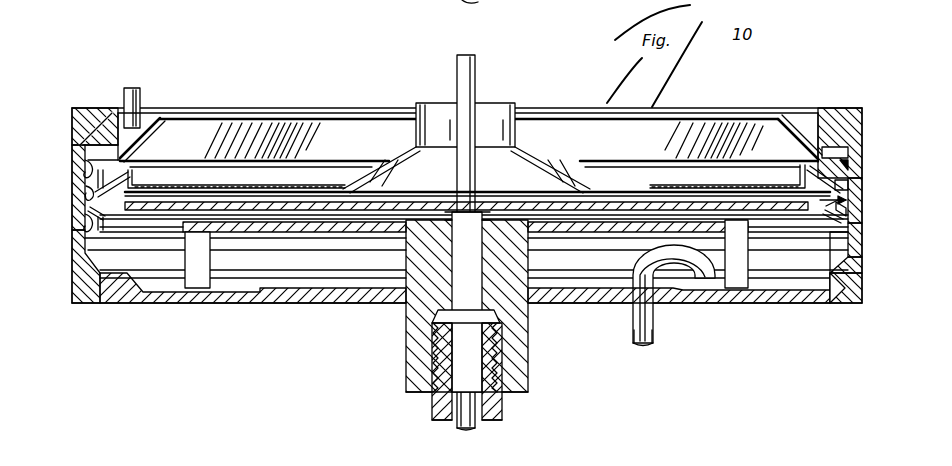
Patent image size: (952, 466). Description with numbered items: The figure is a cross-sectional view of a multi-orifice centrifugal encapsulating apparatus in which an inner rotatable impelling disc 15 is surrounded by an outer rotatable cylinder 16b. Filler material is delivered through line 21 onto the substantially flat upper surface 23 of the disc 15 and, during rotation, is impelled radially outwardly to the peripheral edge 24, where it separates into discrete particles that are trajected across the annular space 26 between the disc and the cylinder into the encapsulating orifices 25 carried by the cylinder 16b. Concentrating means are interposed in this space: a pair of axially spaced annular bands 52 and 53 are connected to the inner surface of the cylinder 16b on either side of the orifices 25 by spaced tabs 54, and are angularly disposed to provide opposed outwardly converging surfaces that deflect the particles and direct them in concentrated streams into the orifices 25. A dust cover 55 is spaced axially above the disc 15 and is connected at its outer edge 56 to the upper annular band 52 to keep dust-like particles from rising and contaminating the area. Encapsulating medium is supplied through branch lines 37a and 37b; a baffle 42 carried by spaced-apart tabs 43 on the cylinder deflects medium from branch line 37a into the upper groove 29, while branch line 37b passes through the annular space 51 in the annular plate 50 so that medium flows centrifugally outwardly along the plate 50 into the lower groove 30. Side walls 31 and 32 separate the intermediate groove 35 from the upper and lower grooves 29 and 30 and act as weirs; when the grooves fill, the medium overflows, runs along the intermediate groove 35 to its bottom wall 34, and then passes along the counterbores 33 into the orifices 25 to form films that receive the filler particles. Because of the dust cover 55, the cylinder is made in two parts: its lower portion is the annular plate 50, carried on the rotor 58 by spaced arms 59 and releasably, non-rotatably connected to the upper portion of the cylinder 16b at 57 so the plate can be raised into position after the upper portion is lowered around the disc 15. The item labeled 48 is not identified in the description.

The outer rotatable cylinder 16b is at (870, 128).
The line 21 is at (456, 70).
The upper surface 23 is at (327, 203).
The peripheral edge 24 is at (856, 172).
The encapsulating orifices 25 is at (858, 202).
The annular space 26 is at (836, 208).
The upper groove 29 is at (87, 150).
The lower groove 30 is at (90, 248).
The side wall (upper weir) 31 is at (856, 162).
The side wall (lower weir) 32 is at (858, 234).
The counterbores 33 is at (858, 188).
The bottom wall 34 is at (858, 216).
The intermediate groove 35 is at (86, 196).
The branch line 37a is at (137, 90).
The branch line 37b is at (656, 342).
The baffle 42 is at (175, 123).
The tabs 43 is at (100, 128).
The element 48 is at (480, 2).
The annular plate 50 is at (778, 304).
The annular space 51 is at (666, 292).
The upper annular band 52 is at (84, 184).
The lower annular band 53 is at (86, 214).
The tabs 54 is at (80, 165).
The dust cover 55 is at (304, 192).
The outer edge 56 is at (133, 183).
The connection 57 is at (857, 296).
The rotor 58 is at (550, 232).
The arms 59 is at (178, 292).
The disc 15 is at (313, 225).